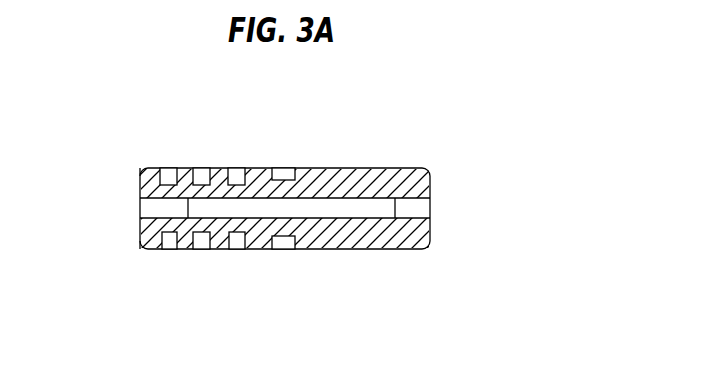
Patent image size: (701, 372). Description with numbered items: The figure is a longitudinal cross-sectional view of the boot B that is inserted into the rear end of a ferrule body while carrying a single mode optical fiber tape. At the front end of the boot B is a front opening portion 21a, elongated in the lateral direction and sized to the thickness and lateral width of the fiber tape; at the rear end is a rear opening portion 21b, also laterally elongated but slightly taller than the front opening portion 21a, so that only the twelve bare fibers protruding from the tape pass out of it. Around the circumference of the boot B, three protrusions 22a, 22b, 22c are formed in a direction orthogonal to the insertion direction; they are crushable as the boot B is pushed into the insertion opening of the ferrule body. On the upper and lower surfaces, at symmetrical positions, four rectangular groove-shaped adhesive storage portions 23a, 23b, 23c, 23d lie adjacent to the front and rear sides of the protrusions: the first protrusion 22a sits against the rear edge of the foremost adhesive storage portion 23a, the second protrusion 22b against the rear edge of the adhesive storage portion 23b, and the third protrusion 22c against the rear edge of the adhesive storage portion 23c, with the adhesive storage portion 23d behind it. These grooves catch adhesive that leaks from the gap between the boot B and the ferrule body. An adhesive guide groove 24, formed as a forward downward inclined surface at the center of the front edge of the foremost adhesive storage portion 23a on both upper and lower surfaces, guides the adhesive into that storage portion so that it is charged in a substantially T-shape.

The boot B is at (280, 207).
The front opening portion 21a is at (140, 207).
The rear opening portion 21b is at (418, 208).
The first protrusion 22a is at (180, 252).
The second protrusion 22b is at (214, 252).
The third protrusion 22c is at (248, 252).
The adhesive storage portion 23a is at (170, 166).
The adhesive storage portion 23b is at (203, 166).
The adhesive storage portion 23c is at (235, 166).
The adhesive storage portion 23d is at (283, 166).
The adhesive guide groove 24 is at (152, 171).